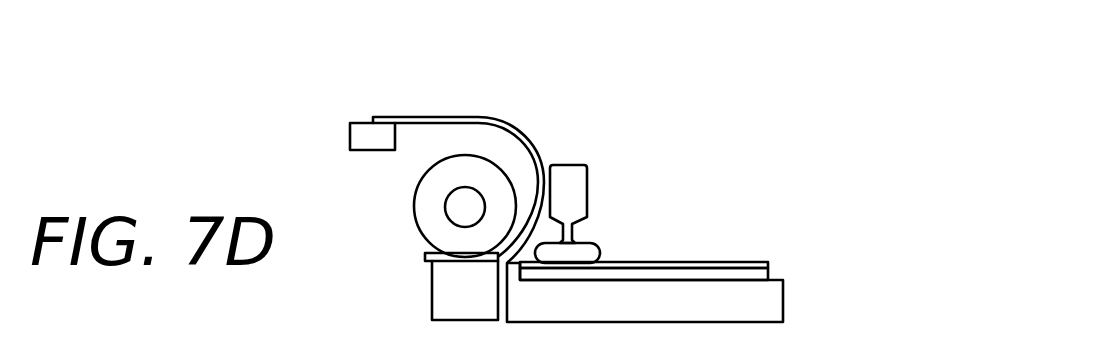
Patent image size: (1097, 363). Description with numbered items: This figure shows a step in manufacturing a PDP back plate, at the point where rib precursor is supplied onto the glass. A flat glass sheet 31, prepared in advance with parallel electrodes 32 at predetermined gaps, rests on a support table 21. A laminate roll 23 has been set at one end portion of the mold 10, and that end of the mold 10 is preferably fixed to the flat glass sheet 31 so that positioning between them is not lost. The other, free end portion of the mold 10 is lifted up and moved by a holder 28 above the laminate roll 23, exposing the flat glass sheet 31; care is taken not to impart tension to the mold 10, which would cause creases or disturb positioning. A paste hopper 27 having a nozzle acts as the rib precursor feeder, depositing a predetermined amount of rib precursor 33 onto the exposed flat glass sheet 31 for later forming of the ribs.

The mold 10 is at (478, 118).
The holder 28 is at (372, 138).
The laminate roll 23 is at (433, 223).
The paste hopper 27 is at (568, 178).
The rib precursor 33 is at (583, 252).
The parallel electrodes 32 is at (748, 262).
The flat glass sheet 31 is at (762, 277).
The support table 21 is at (772, 303).